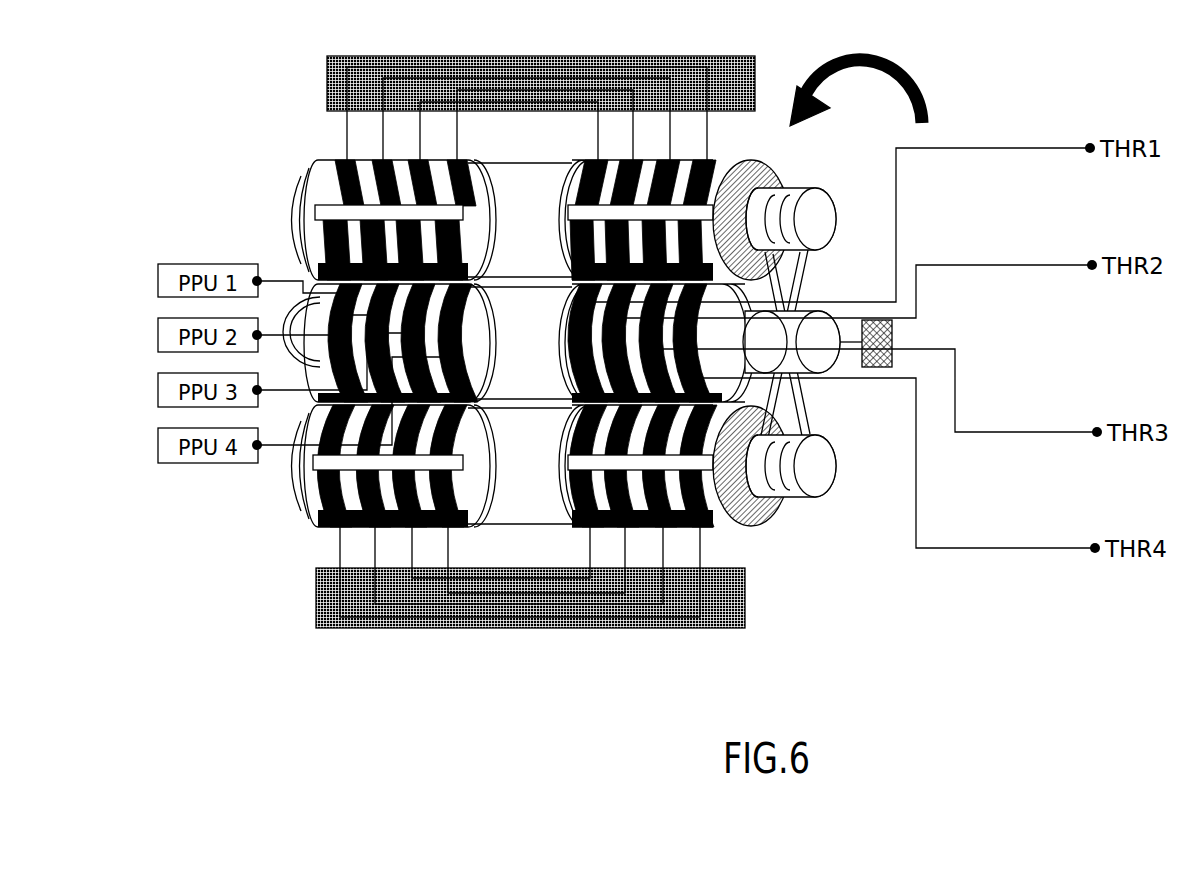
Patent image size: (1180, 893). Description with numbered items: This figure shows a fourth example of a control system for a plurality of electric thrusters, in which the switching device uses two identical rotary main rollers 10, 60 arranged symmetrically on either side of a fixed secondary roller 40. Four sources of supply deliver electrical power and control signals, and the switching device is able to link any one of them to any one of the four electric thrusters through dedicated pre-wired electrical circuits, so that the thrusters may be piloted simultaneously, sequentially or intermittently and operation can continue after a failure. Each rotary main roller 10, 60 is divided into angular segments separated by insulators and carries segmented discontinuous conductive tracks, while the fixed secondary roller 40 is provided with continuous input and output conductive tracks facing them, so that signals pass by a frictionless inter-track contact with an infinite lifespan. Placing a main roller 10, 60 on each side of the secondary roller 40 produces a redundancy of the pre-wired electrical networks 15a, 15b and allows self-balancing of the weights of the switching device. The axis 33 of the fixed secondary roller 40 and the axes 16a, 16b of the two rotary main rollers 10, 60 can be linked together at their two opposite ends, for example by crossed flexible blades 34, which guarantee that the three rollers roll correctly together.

The rotary main roller 10 is at (540, 176).
The pre-wired electrical network 15a is at (737, 630).
The pre-wired electrical network 15b is at (758, 70).
The axis of rotary main roller 16a is at (829, 471).
The axis of rotary main roller 16b is at (826, 216).
The axis of fixed secondary roller 33 is at (818, 314).
The crossed flexible blades 34 is at (806, 283).
The fixed secondary roller 40 is at (822, 364).
The rotary main roller 60 is at (535, 520).